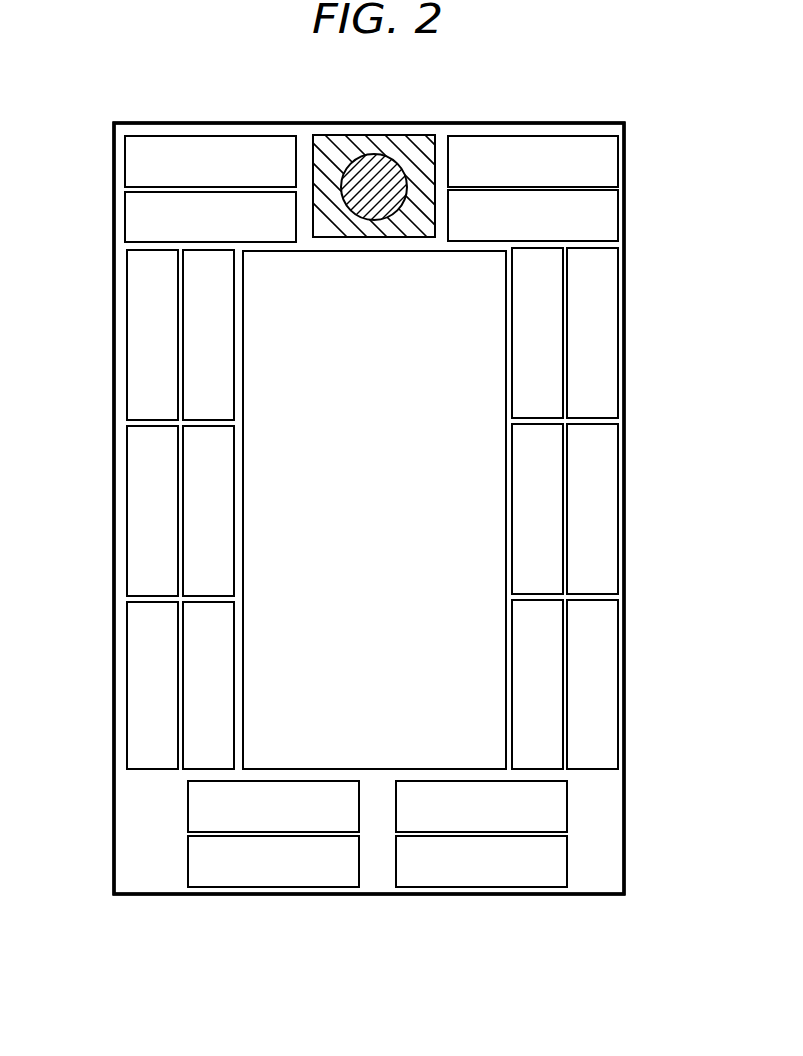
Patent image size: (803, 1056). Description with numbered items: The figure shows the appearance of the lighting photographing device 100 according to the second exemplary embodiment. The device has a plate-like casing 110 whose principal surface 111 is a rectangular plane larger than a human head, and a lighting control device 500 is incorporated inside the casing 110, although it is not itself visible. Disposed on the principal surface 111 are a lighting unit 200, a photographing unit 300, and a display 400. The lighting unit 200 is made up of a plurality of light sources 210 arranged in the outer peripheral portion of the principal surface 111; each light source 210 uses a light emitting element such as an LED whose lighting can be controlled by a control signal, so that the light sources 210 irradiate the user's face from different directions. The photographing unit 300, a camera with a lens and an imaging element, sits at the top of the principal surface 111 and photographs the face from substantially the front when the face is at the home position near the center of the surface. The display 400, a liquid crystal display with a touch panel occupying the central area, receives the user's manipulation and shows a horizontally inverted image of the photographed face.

The lighting photographing device 100 is at (618, 72).
The lighting control device 500 is at (369, 468).
The casing 110 is at (625, 773).
The principal surface 111 is at (585, 823).
The lighting unit 200 is at (122, 257).
The light source 210 is at (135, 344).
The photographing unit 300 is at (360, 133).
The display 400 is at (255, 488).